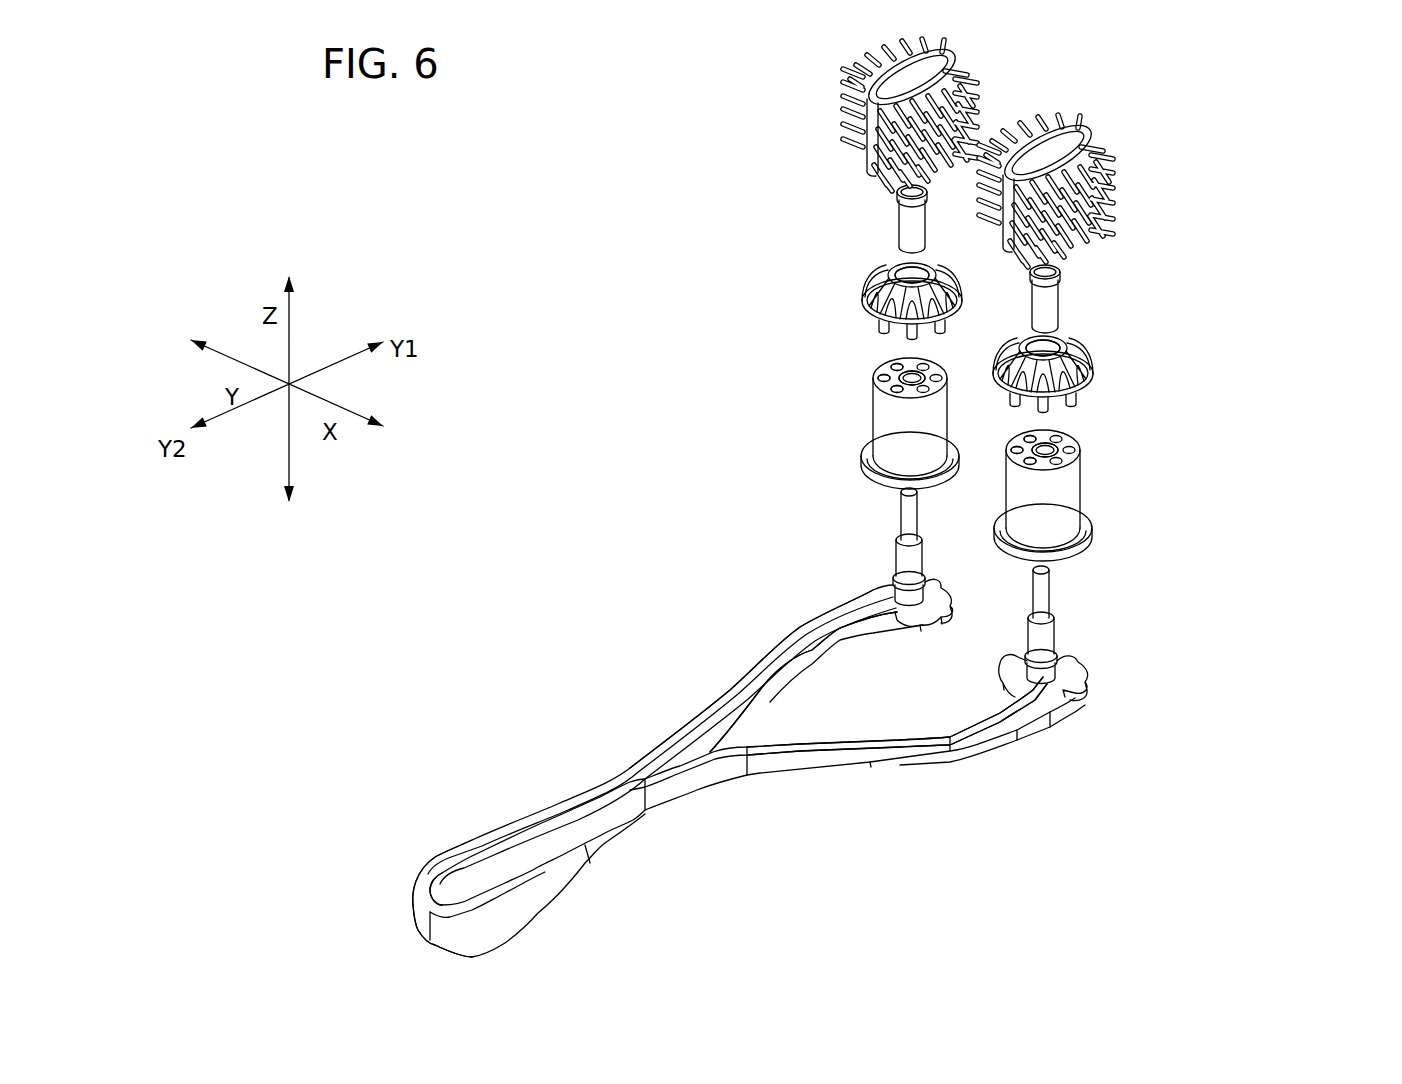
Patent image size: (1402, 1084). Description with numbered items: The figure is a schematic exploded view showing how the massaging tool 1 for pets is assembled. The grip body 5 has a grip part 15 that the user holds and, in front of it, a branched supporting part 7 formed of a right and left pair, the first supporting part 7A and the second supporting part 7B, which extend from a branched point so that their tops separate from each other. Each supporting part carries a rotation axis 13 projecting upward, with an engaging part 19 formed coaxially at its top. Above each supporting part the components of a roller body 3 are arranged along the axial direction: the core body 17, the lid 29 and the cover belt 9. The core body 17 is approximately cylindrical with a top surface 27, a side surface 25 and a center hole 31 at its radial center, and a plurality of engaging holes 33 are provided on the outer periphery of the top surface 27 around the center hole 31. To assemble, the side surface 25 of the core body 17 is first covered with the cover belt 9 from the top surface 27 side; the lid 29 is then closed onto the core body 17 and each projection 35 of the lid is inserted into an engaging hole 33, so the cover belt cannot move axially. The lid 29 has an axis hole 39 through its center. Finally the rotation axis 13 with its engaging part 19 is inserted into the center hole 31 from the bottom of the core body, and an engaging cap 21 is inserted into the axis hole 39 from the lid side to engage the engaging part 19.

The massaging tool 1 is at (592, 652).
The roller body 3 is at (693, 52).
The grip body 5 is at (578, 790).
The branched supporting part 7 is at (709, 523).
The first supporting part 7A is at (800, 623).
The second supporting part 7B is at (873, 747).
The cover belt 9 is at (852, 136).
The rotation axis 13 is at (903, 563).
The grip part 15 is at (481, 842).
The core body 17 is at (892, 452).
The engaging part 19 is at (902, 513).
The engaging cap 21 is at (897, 200).
The side surface 25 is at (880, 405).
The top surface 27 is at (876, 381).
The lid 29 is at (866, 292).
The center hole 31 is at (908, 377).
The engaging hole 33 is at (880, 360).
The projection 35 is at (872, 330).
The axis hole 39 is at (903, 272).